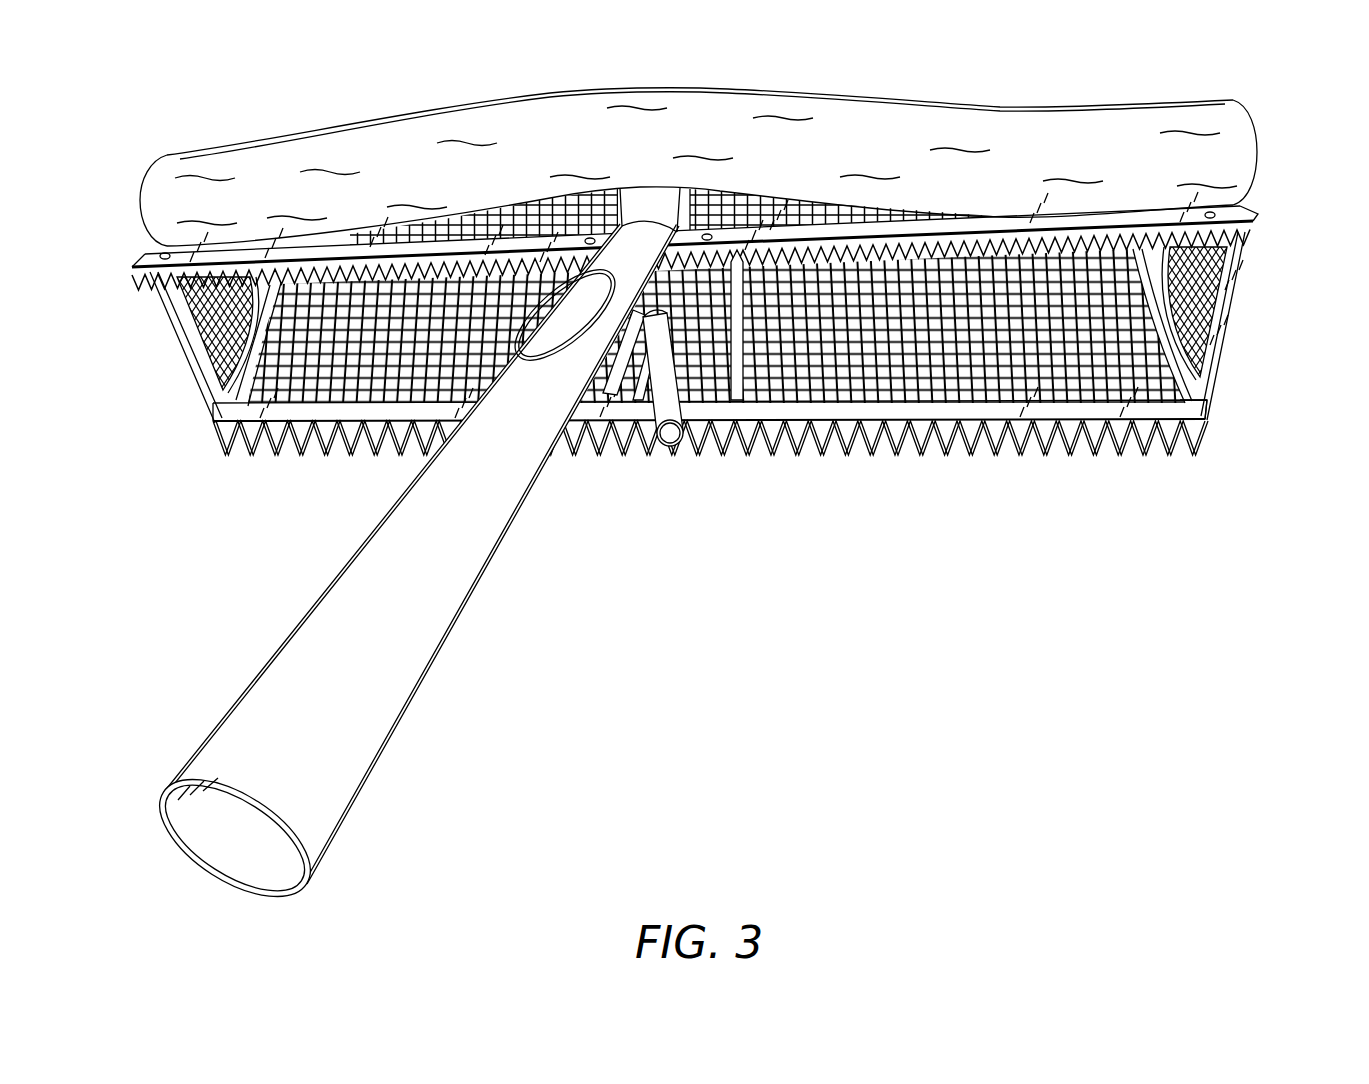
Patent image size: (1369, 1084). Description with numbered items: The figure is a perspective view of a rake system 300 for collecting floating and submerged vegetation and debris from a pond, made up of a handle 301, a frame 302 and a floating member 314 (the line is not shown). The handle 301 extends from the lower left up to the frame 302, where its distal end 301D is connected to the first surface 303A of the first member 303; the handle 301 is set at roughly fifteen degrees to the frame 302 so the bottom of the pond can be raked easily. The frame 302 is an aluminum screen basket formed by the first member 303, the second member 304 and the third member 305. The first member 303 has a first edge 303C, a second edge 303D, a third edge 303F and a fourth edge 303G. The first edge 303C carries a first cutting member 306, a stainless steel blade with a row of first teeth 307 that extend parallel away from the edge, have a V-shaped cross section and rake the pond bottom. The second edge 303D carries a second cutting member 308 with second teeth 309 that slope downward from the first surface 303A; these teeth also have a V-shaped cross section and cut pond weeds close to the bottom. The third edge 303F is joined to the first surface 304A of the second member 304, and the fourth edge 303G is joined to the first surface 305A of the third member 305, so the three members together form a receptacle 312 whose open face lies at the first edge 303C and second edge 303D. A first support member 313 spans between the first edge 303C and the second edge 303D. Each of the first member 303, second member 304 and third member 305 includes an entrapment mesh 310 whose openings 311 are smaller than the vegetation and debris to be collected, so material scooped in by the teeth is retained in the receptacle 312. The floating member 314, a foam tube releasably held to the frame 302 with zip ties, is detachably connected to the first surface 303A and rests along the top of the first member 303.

The rake system 300 is at (211, 131).
The handle 301 is at (218, 766).
The distal end of the handle 301D is at (640, 207).
The frame 302 is at (1055, 90).
The first member 303 is at (735, 372).
The first surface of the first member 303A is at (707, 207).
The first edge of the first member 303C is at (993, 225).
The second edge of the first member 303D is at (1180, 413).
The third edge of the first member 303F is at (1240, 222).
The fourth edge of the first member 303G is at (157, 252).
The second member 304 is at (1217, 340).
The first surface of the second member 304A is at (1223, 293).
The third member 305 is at (200, 363).
The first surface of the third member 305A is at (190, 317).
The first cutting member 306 is at (477, 263).
The first teeth 307 is at (505, 262).
The second cutting member 308 is at (963, 417).
The second teeth 309 is at (1053, 443).
The entrapment mesh 310 is at (233, 397).
The openings 311 is at (275, 395).
The receptacle 312 is at (803, 385).
The first support member 313 is at (657, 405).
The floating member 314 is at (378, 148).